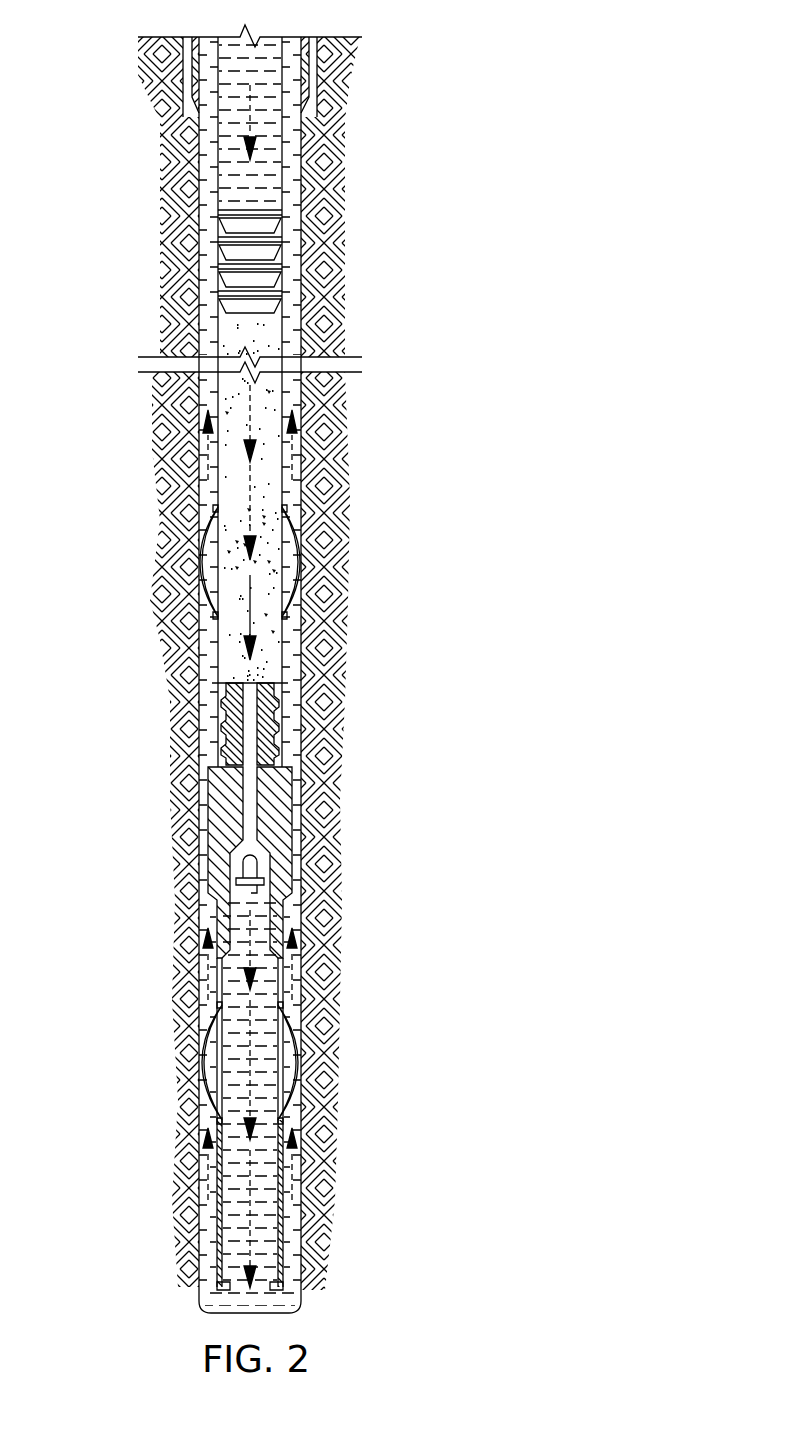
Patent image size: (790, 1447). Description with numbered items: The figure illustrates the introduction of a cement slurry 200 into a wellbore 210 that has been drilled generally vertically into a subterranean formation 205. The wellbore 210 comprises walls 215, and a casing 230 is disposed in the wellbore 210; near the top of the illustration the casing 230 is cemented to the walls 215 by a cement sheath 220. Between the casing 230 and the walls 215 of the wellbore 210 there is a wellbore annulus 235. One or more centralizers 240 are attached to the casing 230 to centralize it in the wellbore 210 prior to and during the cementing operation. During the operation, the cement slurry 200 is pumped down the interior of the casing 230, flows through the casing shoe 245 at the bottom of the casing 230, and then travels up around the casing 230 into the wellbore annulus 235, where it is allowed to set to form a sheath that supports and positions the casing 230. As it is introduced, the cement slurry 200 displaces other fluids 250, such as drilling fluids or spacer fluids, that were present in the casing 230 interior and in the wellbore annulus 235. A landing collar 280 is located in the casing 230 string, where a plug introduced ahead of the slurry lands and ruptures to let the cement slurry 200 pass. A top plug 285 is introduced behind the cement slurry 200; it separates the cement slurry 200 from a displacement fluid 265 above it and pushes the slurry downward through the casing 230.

The cement slurry 200 is at (250, 503).
The subterranean formation 205 is at (474, 708).
The wellbore 210 is at (318, 563).
The walls 215 is at (318, 215).
The cement sheath 220 is at (313, 40).
The casing 230 is at (282, 486).
The wellbore annulus 235 is at (200, 495).
The centralizers 240 is at (198, 1062).
The casing shoe 245 is at (207, 1220).
The fluids 250 is at (252, 930).
The displacement fluid 265 is at (250, 115).
The landing collar 280 is at (218, 698).
The top plug 285 is at (220, 262).